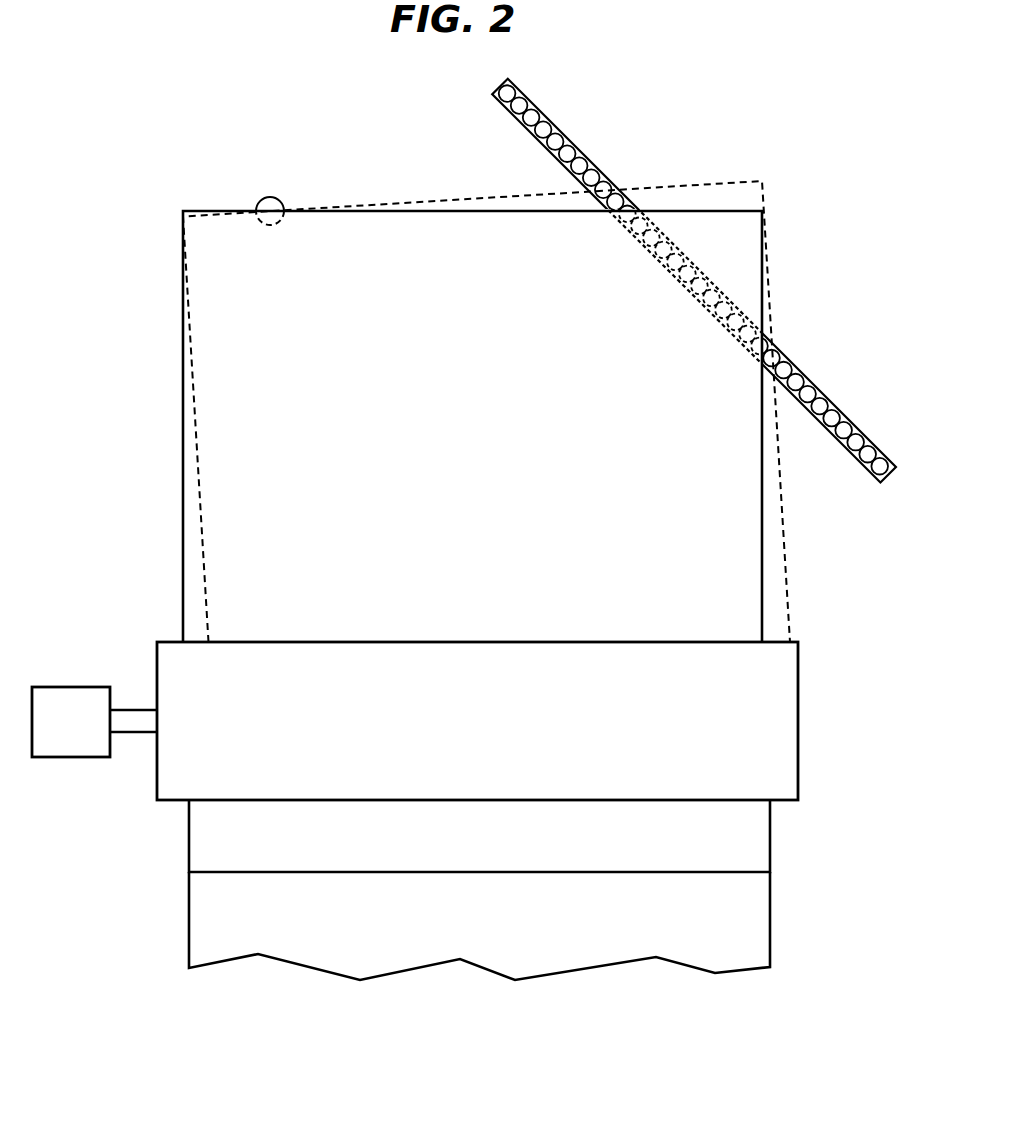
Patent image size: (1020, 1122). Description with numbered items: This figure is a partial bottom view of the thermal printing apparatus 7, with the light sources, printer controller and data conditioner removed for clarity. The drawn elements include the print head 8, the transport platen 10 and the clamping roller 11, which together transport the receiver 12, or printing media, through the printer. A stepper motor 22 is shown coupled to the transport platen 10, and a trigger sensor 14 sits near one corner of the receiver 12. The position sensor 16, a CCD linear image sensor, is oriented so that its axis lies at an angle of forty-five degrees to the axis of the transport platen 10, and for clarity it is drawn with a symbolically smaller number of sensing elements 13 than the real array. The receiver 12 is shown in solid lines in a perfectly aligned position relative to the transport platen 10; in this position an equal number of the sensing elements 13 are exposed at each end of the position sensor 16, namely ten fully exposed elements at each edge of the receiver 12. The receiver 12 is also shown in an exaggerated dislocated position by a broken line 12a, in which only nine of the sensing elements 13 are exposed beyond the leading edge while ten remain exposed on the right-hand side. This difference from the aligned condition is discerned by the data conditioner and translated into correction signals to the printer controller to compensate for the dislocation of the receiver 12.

The thermal printing apparatus 7 is at (641, 142).
The print head 8 is at (200, 912).
The transport platen 10 is at (798, 752).
The clamping roller 11 is at (195, 829).
The receiver 12 is at (509, 209).
The broken line showing dislocated receiver position 12a is at (670, 184).
The sensing elements 13 is at (842, 412).
The trigger sensor 14 is at (269, 197).
The position sensor 16 is at (563, 136).
The stepper motor 22 is at (62, 687).